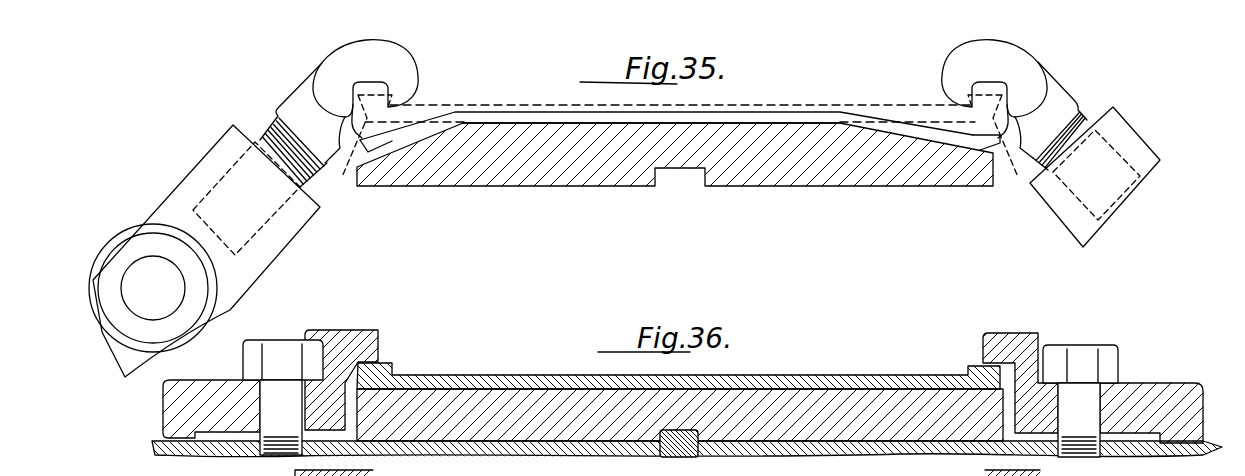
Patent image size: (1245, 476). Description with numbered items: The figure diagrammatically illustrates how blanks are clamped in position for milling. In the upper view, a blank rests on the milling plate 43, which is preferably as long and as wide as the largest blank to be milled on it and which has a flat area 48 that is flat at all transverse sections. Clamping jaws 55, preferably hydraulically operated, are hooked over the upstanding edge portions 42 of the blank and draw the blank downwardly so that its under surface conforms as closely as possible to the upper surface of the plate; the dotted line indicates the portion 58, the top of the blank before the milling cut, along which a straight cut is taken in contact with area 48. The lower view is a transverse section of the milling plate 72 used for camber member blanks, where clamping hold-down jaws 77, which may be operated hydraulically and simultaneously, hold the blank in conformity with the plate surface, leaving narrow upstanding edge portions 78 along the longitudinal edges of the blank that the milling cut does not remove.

In FIG. 35, the upstanding edge portions 42 is at (357, 143).
In FIG. 35, the milling plate 43 is at (798, 183).
In FIG. 35, the flat area 48 is at (590, 126).
In FIG. 35, the clamping jaws 55 is at (336, 67).
In FIG. 35, the portion of the blank 58 is at (742, 107).
In FIG. 36, the milling plate 72 is at (864, 434).
In FIG. 36, the clamping hold-down jaws 77 is at (355, 330).
In FIG. 36, the upstanding edge portions 78 is at (386, 365).